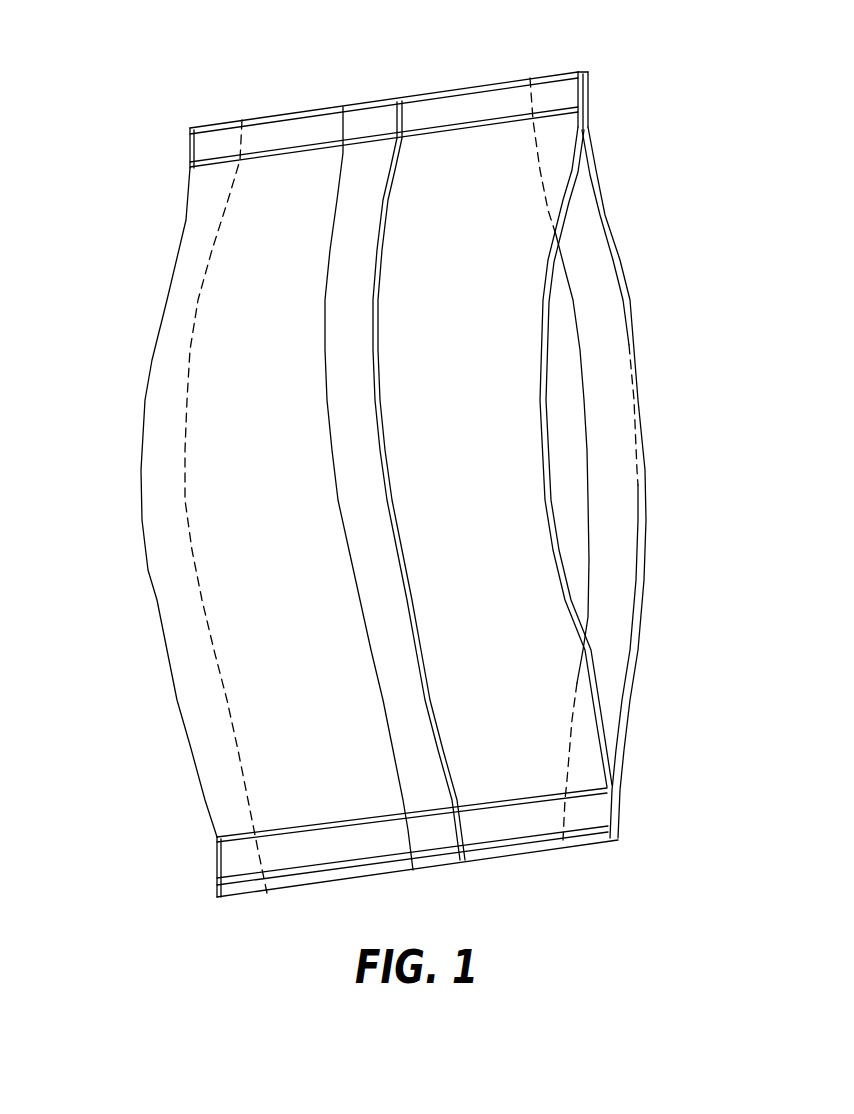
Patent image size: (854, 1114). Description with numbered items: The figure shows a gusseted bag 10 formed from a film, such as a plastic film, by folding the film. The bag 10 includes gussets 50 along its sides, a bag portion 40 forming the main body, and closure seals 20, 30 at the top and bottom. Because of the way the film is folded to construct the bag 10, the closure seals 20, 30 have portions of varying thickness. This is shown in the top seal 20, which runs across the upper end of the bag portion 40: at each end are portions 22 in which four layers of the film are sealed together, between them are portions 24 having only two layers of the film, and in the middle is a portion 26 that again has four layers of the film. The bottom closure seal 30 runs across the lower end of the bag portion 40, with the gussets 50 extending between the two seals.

The gusseted bag 10 is at (148, 231).
The top seal 20 is at (588, 94).
The four-layer portions 22 is at (210, 127).
The two-layer portions 24 is at (292, 116).
The four-layer portion 26 is at (368, 102).
The bottom closure seal 30 is at (615, 800).
The bag portion 40 is at (248, 345).
The gussets 50 is at (143, 513).